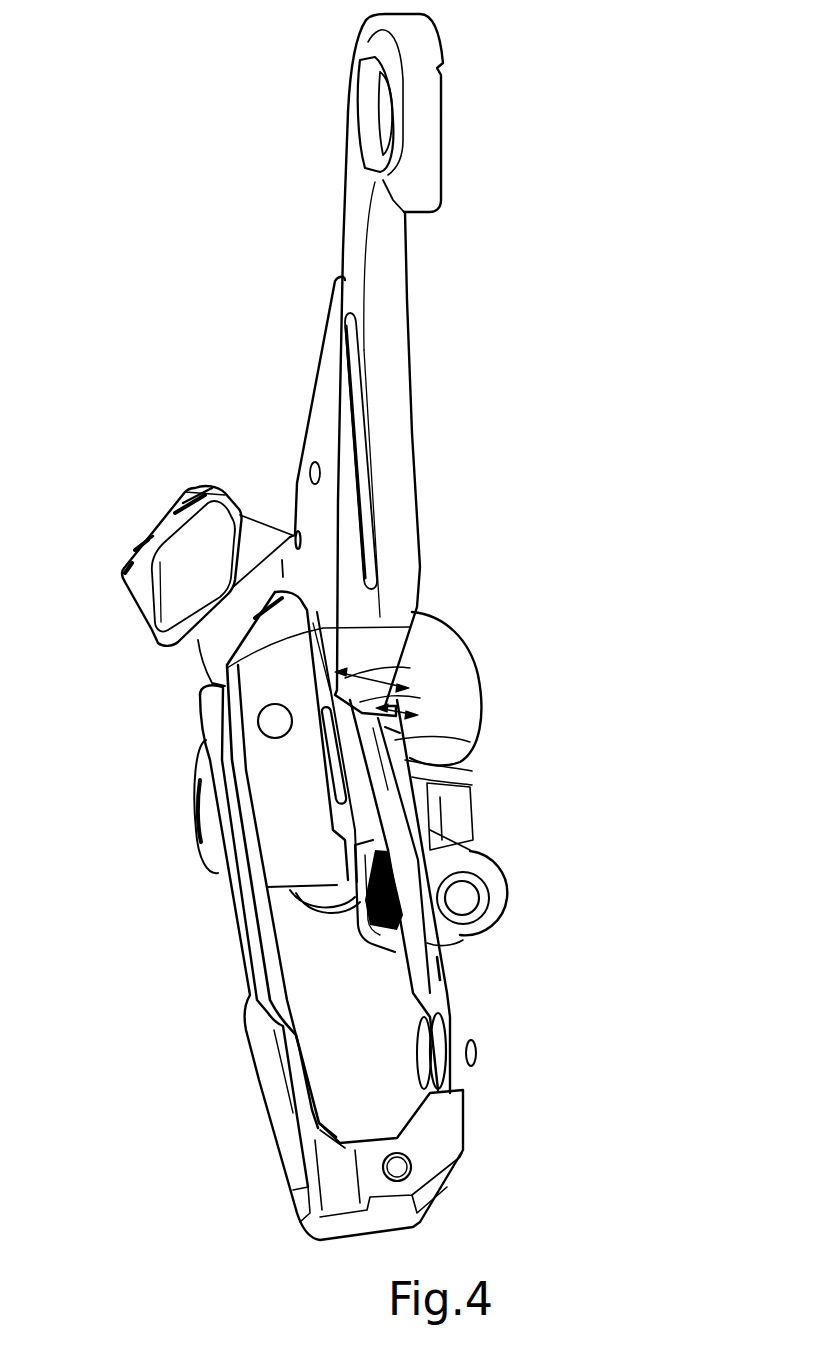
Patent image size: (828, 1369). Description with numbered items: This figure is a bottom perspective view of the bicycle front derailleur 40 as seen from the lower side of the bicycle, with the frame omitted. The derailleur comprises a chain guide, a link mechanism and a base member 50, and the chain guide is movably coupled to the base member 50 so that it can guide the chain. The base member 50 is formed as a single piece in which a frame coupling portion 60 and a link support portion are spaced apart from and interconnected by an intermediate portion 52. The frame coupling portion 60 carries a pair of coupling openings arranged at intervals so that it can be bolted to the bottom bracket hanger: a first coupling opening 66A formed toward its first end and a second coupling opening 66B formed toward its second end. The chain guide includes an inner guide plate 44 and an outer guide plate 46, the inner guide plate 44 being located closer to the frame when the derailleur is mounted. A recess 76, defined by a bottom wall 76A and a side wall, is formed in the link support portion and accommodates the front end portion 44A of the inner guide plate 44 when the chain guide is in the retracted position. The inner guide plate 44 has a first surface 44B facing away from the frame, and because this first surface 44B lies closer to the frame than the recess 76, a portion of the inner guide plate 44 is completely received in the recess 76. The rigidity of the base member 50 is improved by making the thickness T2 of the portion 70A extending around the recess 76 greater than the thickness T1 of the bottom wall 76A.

The bicycle front derailleur 40 is at (620, 185).
The inner guide plate 44 is at (427, 943).
The front end portion 44A is at (443, 777).
The first surface 44B is at (363, 768).
The outer guide plate 46 is at (268, 952).
The base member 50 is at (433, 493).
The intermediate portion 52 is at (323, 422).
The frame coupling portion 60 is at (425, 132).
The first coupling opening 66A is at (357, 357).
The second coupling opening 66B is at (368, 86).
The portion extending around the recess 70A is at (214, 678).
The recess 76 is at (410, 627).
The bottom wall 76A is at (397, 737).
The thickness of the bottom wall T1 is at (397, 700).
The thickness of the portion extending around the recess T2 is at (393, 675).